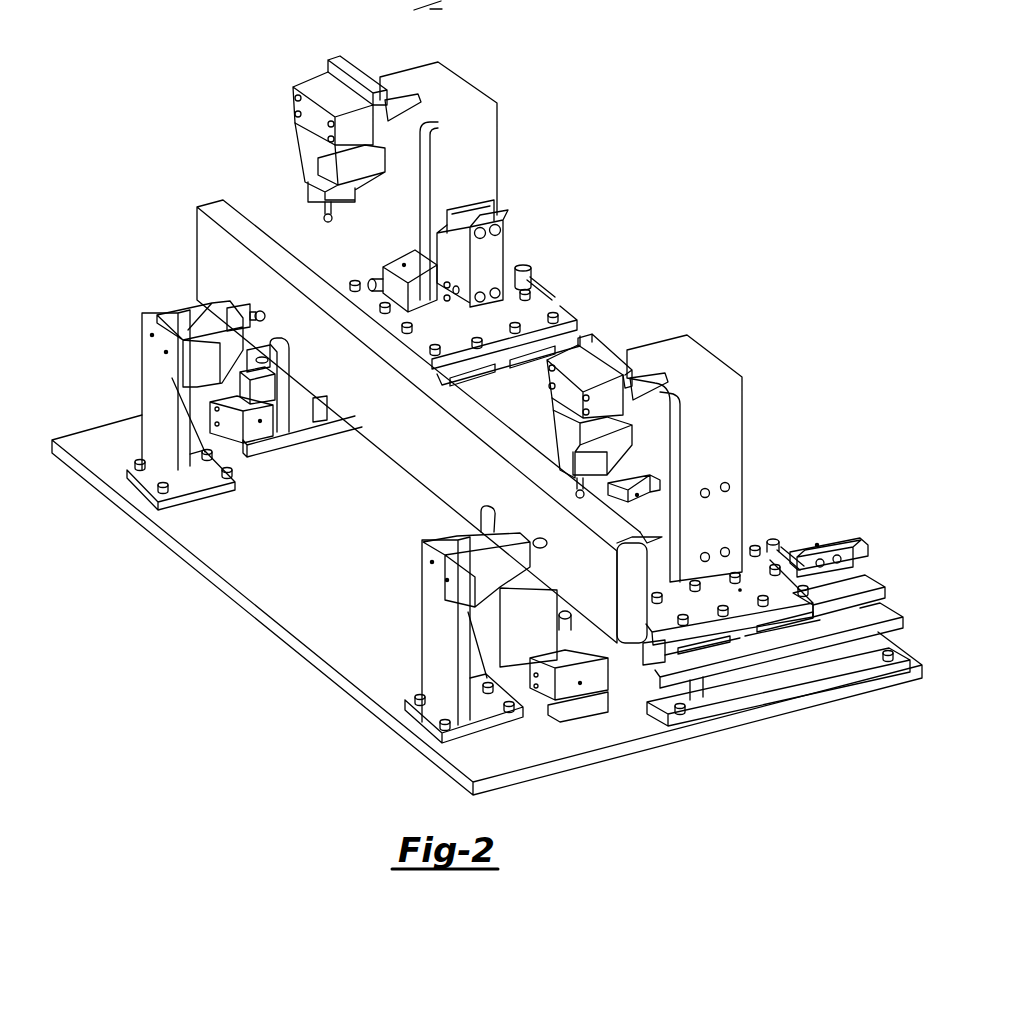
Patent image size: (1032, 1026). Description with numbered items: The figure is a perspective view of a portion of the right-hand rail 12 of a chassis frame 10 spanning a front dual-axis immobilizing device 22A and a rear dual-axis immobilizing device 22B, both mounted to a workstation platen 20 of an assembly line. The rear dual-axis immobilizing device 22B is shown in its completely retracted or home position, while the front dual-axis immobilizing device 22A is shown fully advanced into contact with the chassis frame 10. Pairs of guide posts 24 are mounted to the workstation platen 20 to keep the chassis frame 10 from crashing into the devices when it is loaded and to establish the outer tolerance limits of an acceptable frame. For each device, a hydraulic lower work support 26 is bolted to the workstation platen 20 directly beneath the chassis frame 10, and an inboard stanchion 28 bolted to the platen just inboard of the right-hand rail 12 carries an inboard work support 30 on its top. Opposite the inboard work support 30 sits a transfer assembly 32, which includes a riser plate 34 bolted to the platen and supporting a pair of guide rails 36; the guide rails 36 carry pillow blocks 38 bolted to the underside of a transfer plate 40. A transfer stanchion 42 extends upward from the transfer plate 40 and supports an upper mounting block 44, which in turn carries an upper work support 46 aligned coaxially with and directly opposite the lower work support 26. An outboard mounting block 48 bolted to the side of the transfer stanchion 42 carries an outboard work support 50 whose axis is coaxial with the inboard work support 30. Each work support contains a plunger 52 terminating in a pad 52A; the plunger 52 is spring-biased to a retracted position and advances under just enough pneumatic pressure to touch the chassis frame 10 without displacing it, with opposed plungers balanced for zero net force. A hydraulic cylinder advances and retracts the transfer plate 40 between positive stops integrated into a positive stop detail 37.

The chassis frame 10 is at (197, 249).
The right-hand rail 12 is at (205, 226).
The workstation platen 20 is at (510, 756).
The front dual-axis immobilizing device 22A is at (850, 506).
The rear dual-axis immobilizing device 22B is at (598, 207).
The guide posts 24 is at (290, 438).
The lower work support 26 is at (238, 430).
The inboard stanchion 28 is at (170, 399).
The inboard work support 30 is at (190, 305).
The transfer assembly 32 is at (563, 286).
The riser plate 34 is at (885, 612).
The guide rails 36 is at (822, 542).
The positive stop detail 37 is at (862, 563).
The pillow blocks 38 is at (787, 628).
The transfer plate 40 is at (573, 308).
The transfer stanchion 42 is at (470, 139).
The upper mounting block 44 is at (313, 88).
The upper work support 46 is at (300, 143).
The outboard mounting block 48 is at (490, 258).
The outboard work support 50 is at (455, 240).
The plunger 52 is at (250, 350).
The pad 52A is at (258, 312).